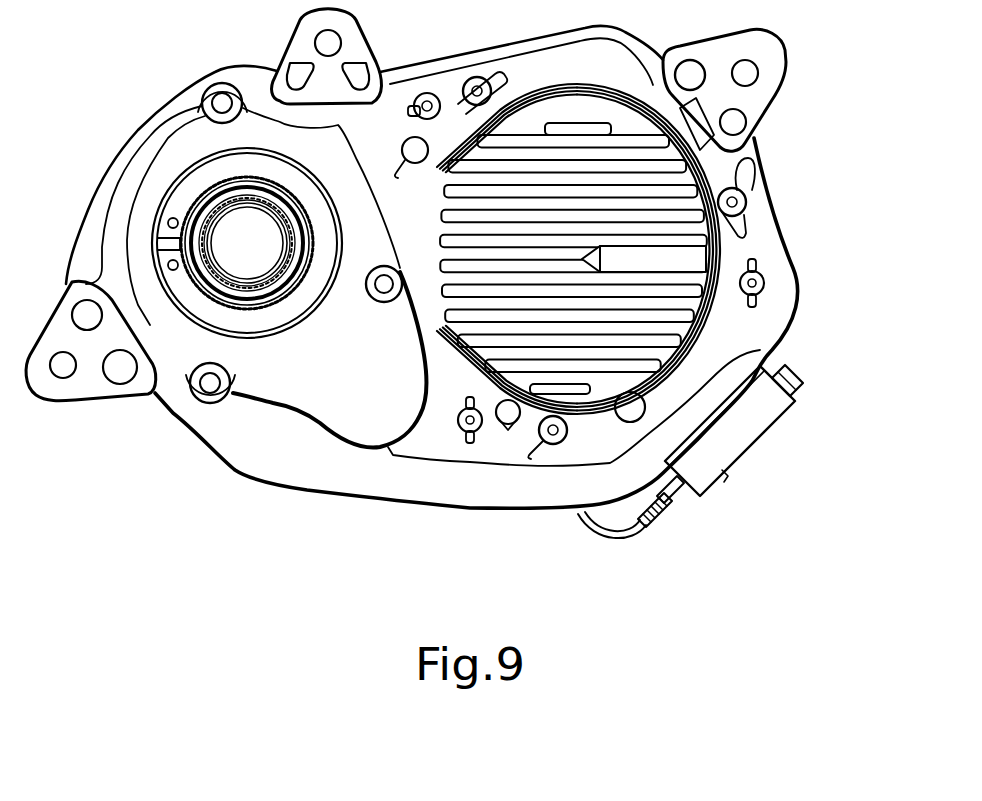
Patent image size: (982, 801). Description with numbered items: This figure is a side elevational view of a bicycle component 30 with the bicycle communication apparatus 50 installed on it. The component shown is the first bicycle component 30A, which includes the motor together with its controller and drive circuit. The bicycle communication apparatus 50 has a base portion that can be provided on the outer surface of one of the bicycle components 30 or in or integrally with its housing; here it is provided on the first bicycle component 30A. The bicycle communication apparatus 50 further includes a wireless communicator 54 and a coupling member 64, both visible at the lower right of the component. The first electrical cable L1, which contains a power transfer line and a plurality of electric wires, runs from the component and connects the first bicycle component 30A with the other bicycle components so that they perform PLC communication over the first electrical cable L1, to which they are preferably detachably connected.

The bicycle component 30 is at (463, 259).
The first bicycle component 30A is at (760, 217).
The bicycle communication apparatus 50 is at (758, 428).
The wireless communicator 54 is at (694, 482).
The coupling member 64 is at (792, 382).
The first electrical cable L1 is at (612, 528).